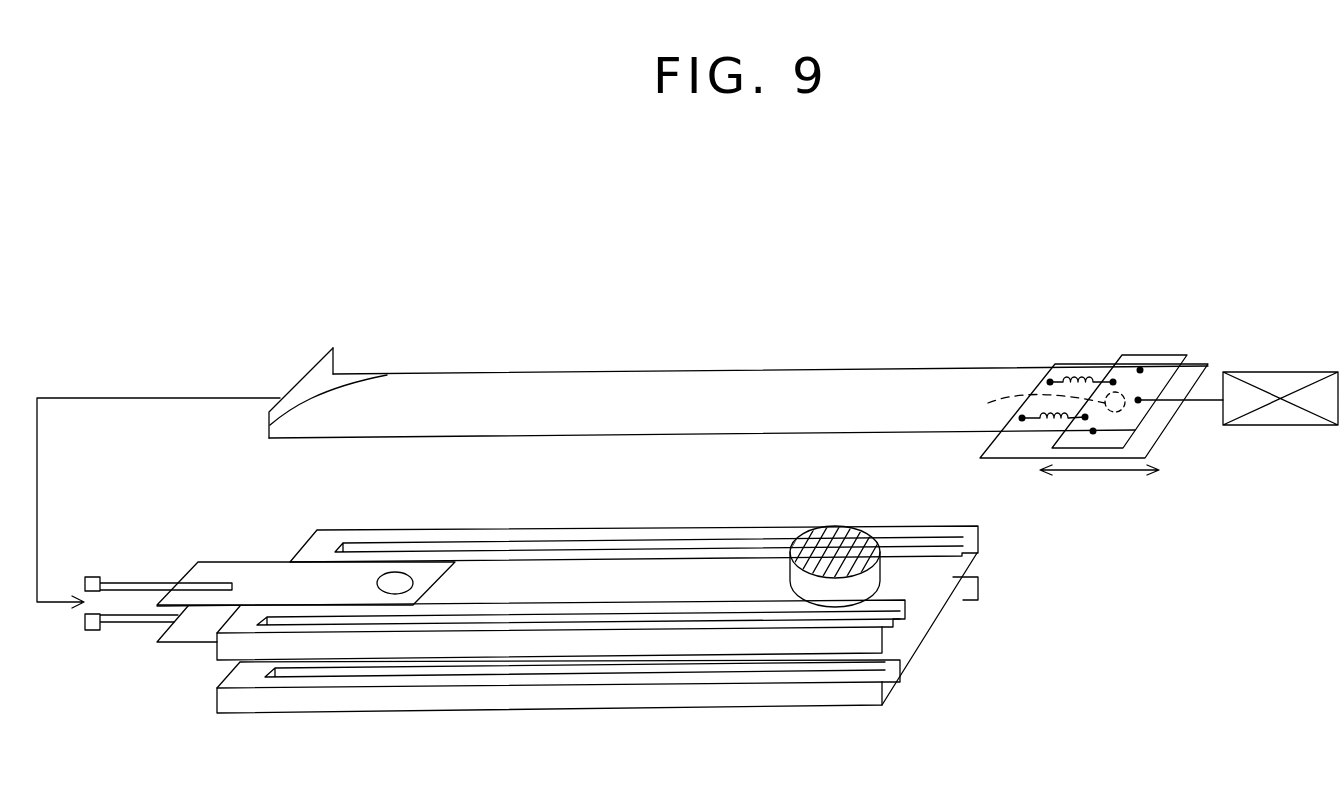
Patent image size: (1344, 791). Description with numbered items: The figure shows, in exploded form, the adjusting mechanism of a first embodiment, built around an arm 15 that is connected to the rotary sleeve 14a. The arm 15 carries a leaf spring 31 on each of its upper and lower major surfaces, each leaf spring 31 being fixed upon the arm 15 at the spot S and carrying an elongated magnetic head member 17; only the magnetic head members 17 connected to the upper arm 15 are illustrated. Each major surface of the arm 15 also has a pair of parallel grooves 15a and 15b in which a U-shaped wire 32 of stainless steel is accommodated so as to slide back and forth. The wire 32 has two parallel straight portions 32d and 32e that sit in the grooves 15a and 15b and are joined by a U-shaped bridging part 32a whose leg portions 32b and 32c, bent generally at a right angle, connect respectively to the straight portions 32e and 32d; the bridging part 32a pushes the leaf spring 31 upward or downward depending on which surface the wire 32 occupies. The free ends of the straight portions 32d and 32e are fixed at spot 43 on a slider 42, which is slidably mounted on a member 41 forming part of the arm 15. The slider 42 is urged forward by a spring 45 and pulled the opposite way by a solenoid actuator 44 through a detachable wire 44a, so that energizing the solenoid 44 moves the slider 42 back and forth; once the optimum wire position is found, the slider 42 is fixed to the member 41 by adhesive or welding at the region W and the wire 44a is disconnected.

The rotary sleeve 14a is at (840, 592).
The arm 15 is at (603, 590).
The groove 15a is at (897, 617).
The groove 15b is at (927, 540).
The magnetic head member 17 is at (130, 582).
The leaf spring 31 is at (212, 570).
The U-shaped wire 32 is at (743, 371).
The U-shaped bridging part 32a is at (316, 365).
The leg portion 32b is at (334, 356).
The leg portion 32c is at (383, 375).
The straight portion 32d is at (545, 373).
The straight portion 32e is at (528, 437).
The member 41 is at (1032, 458).
The slider 42 is at (1137, 357).
The spot 43 is at (1140, 372).
The solenoid actuator 44 is at (1288, 427).
The wire 44a is at (1202, 403).
The spring 45 is at (1075, 378).
The spot S is at (397, 573).
The region W is at (1041, 409).